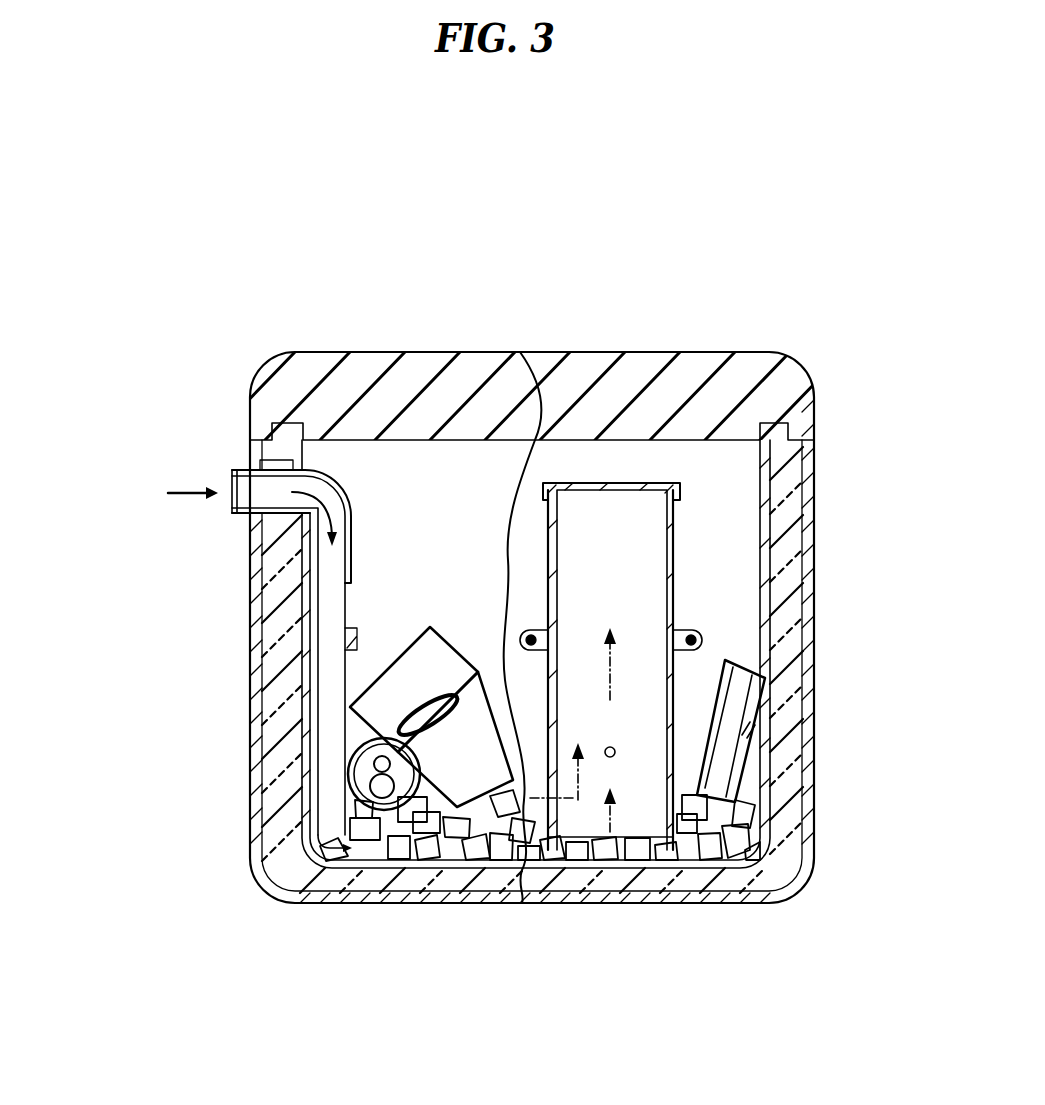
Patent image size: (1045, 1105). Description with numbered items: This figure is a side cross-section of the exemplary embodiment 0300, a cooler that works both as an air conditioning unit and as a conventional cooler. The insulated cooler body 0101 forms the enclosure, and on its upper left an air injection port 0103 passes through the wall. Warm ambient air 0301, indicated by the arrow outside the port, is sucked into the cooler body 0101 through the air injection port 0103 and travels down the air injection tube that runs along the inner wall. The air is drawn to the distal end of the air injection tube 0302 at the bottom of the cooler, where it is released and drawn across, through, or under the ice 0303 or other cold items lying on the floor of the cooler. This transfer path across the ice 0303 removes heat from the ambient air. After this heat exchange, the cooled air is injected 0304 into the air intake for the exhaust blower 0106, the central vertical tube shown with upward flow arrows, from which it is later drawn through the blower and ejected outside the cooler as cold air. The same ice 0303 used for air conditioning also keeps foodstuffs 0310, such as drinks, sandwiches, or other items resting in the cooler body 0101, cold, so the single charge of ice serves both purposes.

The exemplary embodiment 0300 is at (497, 127).
The cooler body 0101 is at (252, 757).
The air injection port 0103 is at (257, 485).
The air intake for the exhaust blower 0106 is at (607, 533).
The warm ambient air 0301 is at (177, 487).
The distal end of the air injection tube 0302 is at (333, 817).
The ice 0303 is at (430, 858).
The injected air 0304 is at (573, 793).
The foodstuffs 0310 is at (730, 670).